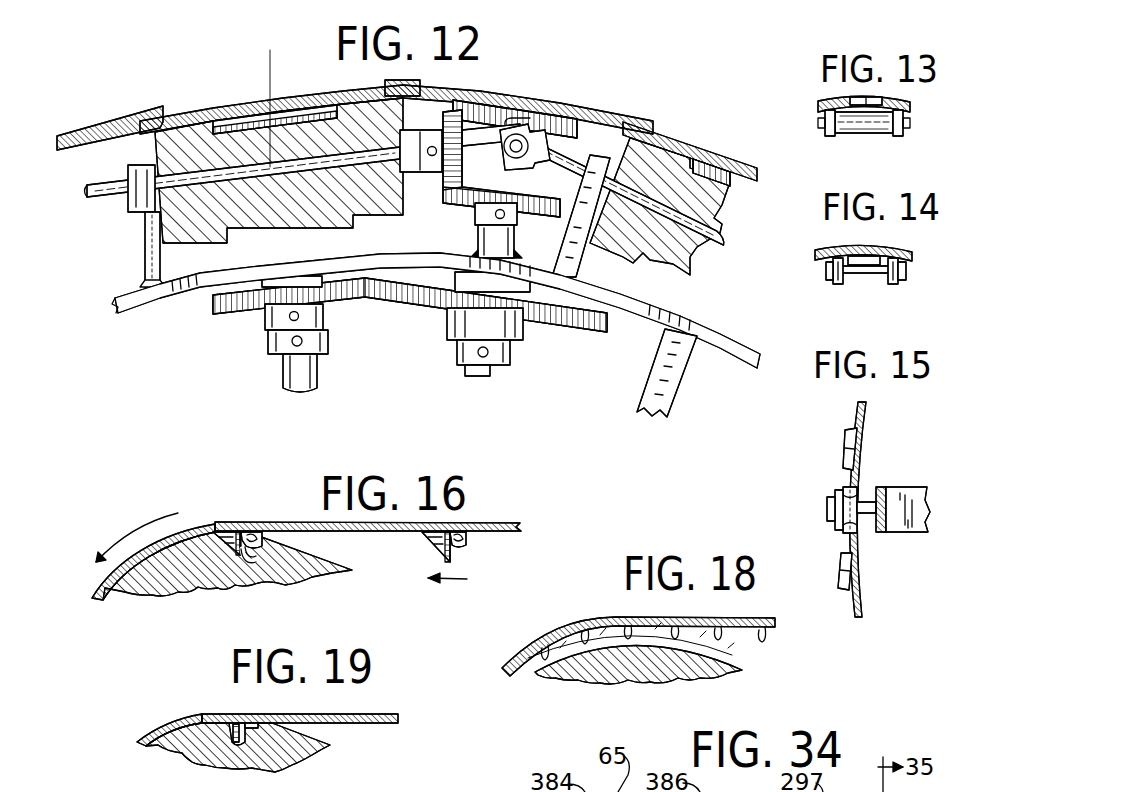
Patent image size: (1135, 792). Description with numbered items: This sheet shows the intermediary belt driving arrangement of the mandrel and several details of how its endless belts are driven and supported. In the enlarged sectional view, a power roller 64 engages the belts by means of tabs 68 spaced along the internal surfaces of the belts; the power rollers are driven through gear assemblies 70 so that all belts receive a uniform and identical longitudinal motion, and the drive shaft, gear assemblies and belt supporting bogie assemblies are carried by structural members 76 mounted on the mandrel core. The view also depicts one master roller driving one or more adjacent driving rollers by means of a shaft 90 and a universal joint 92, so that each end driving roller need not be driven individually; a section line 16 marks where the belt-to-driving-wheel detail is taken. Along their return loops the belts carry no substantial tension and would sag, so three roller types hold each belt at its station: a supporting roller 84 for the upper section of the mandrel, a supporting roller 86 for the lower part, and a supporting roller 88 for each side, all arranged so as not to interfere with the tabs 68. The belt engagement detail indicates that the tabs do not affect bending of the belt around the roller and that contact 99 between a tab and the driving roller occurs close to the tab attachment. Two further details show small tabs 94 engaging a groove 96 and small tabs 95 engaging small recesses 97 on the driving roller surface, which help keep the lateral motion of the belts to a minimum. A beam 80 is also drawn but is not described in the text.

In FIG. 12, the section line 16— 16 is at (272, 66).
In FIG. 12, the power roller 64 is at (175, 135).
In FIG. 12, the tabs 68 is at (500, 105).
In FIG. 13, the tabs 68 is at (875, 99).
In FIG. 15, the tabs 68 is at (845, 456).
In FIG. 16, the tabs 68 is at (453, 552).
In FIG. 12, the gear assemblies 70 is at (364, 304).
In FIG. 12, the structural members 76 is at (645, 388).
In FIG. 12, the ring beam 80 is at (135, 312).
In FIG. 13, the supporting roller 84 is at (887, 133).
In FIG. 14, the supporting roller 86 is at (860, 273).
In FIG. 15, the supporting roller 88 is at (835, 516).
In FIG. 12, the shaft 90 is at (470, 137).
In FIG. 12, the universal joint 92 is at (530, 130).
In FIG. 18, the small tabs 94 is at (772, 632).
In FIG. 19, the small tabs 95 is at (262, 723).
In FIG. 18, the groove 96 is at (728, 652).
In FIG. 19, the small recesses 97 is at (213, 738).
In FIG. 16, the contact 99 is at (254, 545).